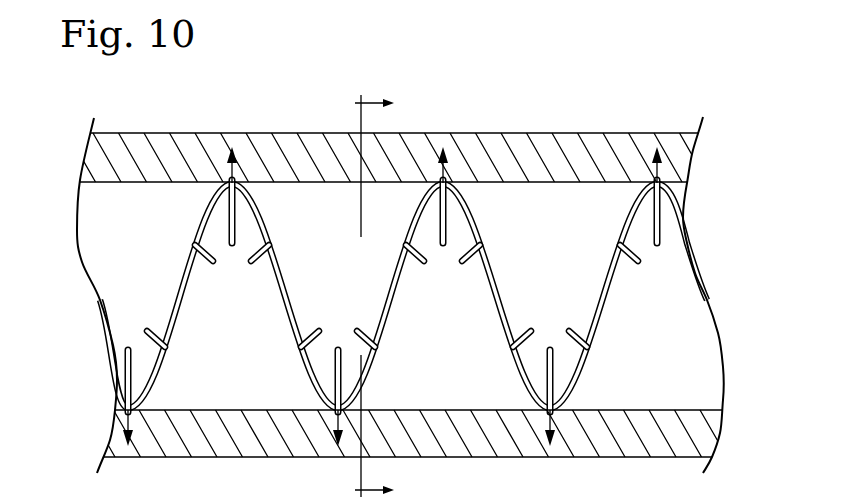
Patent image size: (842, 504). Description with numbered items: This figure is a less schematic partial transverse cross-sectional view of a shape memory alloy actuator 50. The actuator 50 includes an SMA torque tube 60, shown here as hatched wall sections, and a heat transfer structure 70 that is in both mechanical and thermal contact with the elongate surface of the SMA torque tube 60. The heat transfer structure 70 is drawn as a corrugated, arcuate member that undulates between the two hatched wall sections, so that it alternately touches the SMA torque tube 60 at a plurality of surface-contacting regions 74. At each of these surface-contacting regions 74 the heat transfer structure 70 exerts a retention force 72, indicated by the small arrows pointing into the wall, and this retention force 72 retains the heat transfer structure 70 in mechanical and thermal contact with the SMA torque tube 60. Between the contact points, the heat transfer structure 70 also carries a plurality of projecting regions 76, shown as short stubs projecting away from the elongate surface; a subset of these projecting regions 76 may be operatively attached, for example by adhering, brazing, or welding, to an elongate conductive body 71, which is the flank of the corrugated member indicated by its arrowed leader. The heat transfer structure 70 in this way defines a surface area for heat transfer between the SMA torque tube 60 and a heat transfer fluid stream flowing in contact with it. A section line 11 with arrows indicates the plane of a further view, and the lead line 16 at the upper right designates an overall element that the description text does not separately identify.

The heat exchanger 16 is at (736, 30).
The shape memory alloy actuator 50 is at (708, 71).
The SMA torque tube 60 is at (160, 133).
The heat transfer structure 70 is at (181, 287).
The elongate conductive body 71 is at (293, 272).
The retention force 72 is at (236, 169).
The surface-contacting regions 74 is at (229, 182).
The projecting regions 76 is at (249, 264).
The section line 11- 11 is at (388, 295).